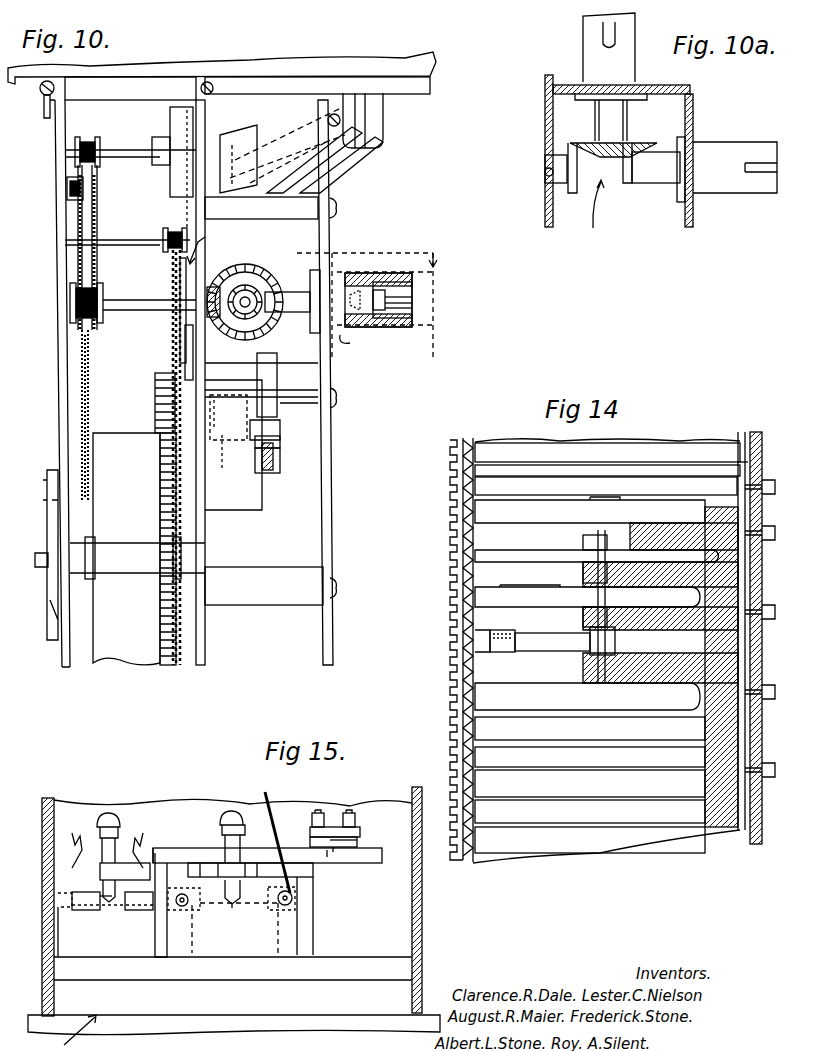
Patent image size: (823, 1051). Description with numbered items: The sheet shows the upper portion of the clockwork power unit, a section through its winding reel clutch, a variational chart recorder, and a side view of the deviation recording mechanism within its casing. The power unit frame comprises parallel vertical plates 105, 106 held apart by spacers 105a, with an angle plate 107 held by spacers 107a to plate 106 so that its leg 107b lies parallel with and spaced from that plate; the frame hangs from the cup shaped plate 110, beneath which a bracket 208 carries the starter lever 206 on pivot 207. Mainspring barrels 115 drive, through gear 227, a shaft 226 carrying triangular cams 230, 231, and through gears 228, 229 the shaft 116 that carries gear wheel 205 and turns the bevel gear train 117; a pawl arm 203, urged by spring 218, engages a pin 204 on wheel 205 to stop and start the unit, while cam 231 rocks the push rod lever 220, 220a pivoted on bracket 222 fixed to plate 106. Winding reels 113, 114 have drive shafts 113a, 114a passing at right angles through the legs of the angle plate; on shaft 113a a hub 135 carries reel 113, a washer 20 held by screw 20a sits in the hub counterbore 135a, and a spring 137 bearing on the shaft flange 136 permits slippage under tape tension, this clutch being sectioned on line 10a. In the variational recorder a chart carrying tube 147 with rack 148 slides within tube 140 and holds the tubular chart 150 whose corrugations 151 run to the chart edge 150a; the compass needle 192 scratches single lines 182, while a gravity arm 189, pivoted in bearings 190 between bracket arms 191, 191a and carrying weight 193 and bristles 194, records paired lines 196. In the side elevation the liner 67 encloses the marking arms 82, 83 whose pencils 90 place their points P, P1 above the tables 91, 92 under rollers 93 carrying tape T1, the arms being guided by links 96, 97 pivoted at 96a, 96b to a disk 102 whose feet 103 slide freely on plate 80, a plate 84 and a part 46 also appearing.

In FIG. 10, the cup shaped plate 110 is at (410, 66).
In FIG. 10, the spacers 105a is at (247, 88).
In FIG. 10, the supports or feet 103 is at (45, 118).
In FIG. 15, the supports or feet 103 is at (333, 848).
In FIG. 10, the vertical plate 105 is at (60, 447).
In FIG. 10, the vertical plate 106 is at (205, 635).
In FIG. 10A, the vertical plate 106 is at (545, 135).
In FIG. 10, the angle plate 107 is at (330, 502).
In FIG. 10A, the angle plate 107 is at (640, 92).
In FIG. 10, the spacers 107a is at (264, 401).
In FIG. 10A, the leg of angle plate 107b is at (693, 118).
In FIG. 10, the pivot 207 is at (355, 125).
In FIG. 10, the starter lever 206 is at (238, 159).
In FIG. 10, the bracket 208 is at (335, 162).
In FIG. 10, the gear wheel 205 is at (160, 252).
In FIG. 10, the pin 204 is at (185, 283).
In FIG. 10, the gear 228 is at (80, 330).
In FIG. 10, the gear 229 is at (85, 290).
In FIG. 10, the shaft 116 is at (120, 300).
In FIG. 10A, the shaft 116 is at (545, 172).
In FIG. 10, the gear 227 is at (160, 400).
In FIG. 10, the pawl arm 203 is at (180, 335).
In FIG. 10, the spring 218 is at (195, 330).
In FIG. 10, the triangular cam 230 is at (175, 452).
In FIG. 10, the mainspring barrels 115 is at (120, 549).
In FIG. 10, the bevel gear train 117 is at (266, 267).
In FIG. 10A, the bevel gear train 117 is at (599, 210).
In FIG. 10, the drive shaft 113a is at (287, 302).
In FIG. 10A, the drive shaft 113a is at (658, 169).
In FIG. 10, the annular flange 136 is at (335, 280).
In FIG. 10, the hub 135 is at (372, 275).
In FIG. 10, the winding reel 113 is at (437, 277).
In FIG. 10A, the winding reel 113 is at (735, 150).
In FIG. 10, the hub counterbore 135a is at (415, 292).
In FIG. 10, the screw 20a is at (415, 303).
In FIG. 10, the washer 20 is at (412, 312).
In FIG. 10, the spring 137 is at (365, 306).
In FIG. 10, the section line 10a- 10a is at (315, 246).
In FIG. 10, the triangular cam 231 is at (270, 365).
In FIG. 10, the bracket 222 is at (233, 445).
In FIG. 10, the shaft 226 is at (298, 408).
In FIG. 10, the clamp 220a is at (275, 440).
In FIG. 10, the push rod lever 220 is at (280, 468).
In FIG. 10A, the winding reel 114 is at (585, 47).
In FIG. 10A, the drive shaft 114a is at (612, 122).
In FIG. 14, the chart carrying tube 147 is at (463, 438).
In FIG. 14, the rack 148 is at (460, 488).
In FIG. 14, the tubular chart 150 is at (672, 443).
In FIG. 14, the internal annular corrugations 151 is at (606, 486).
In FIG. 14, the vertical line markings 182 is at (500, 526).
In FIG. 14, the pairs of closely spaced vertical lines 196 is at (600, 503).
In FIG. 14, the bracket arm 191 is at (640, 612).
In FIG. 14, the recording compass needle 192 is at (490, 562).
In FIG. 14, the bearings 190 is at (625, 636).
In FIG. 14, the arm 189 is at (533, 652).
In FIG. 14, the bristles 194 is at (490, 640).
In FIG. 14, the weight 193 is at (500, 655).
In FIG. 14, the bracket arm 191a is at (645, 685).
In FIG. 14, the tube 140 is at (762, 445).
In FIG. 14, the edge of the chart 150a is at (740, 462).
In FIG. 15, the tubular liner 67 is at (42, 830).
In FIG. 15, the marking table or platen 91 is at (83, 940).
In FIG. 15, the arm 83 is at (140, 866).
In FIG. 15, the marking pencil or stylus 90 is at (125, 830).
In FIG. 15, the plate 80 is at (377, 853).
In FIG. 15, the plate 84 is at (205, 862).
In FIG. 15, the parallel bars or links 97 is at (301, 882).
In FIG. 15, the recording tape T' T1 is at (270, 798).
In FIG. 15, the marking table or platen 92 is at (283, 927).
In FIG. 15, the arm 82 is at (228, 878).
In FIG. 15, the roller 93 is at (135, 908).
In FIG. 15, the point of marking pencil P is at (105, 900).
In FIG. 15, the point of marking pencil P' P1 is at (241, 914).
In FIG. 15, the parallel bars or links 96 is at (345, 828).
In FIG. 15, the pivot 96a is at (322, 814).
In FIG. 15, the pivot 96b is at (360, 842).
In FIG. 15, the disk 102 is at (327, 852).
In FIG. 15, the base 46 is at (80, 1033).